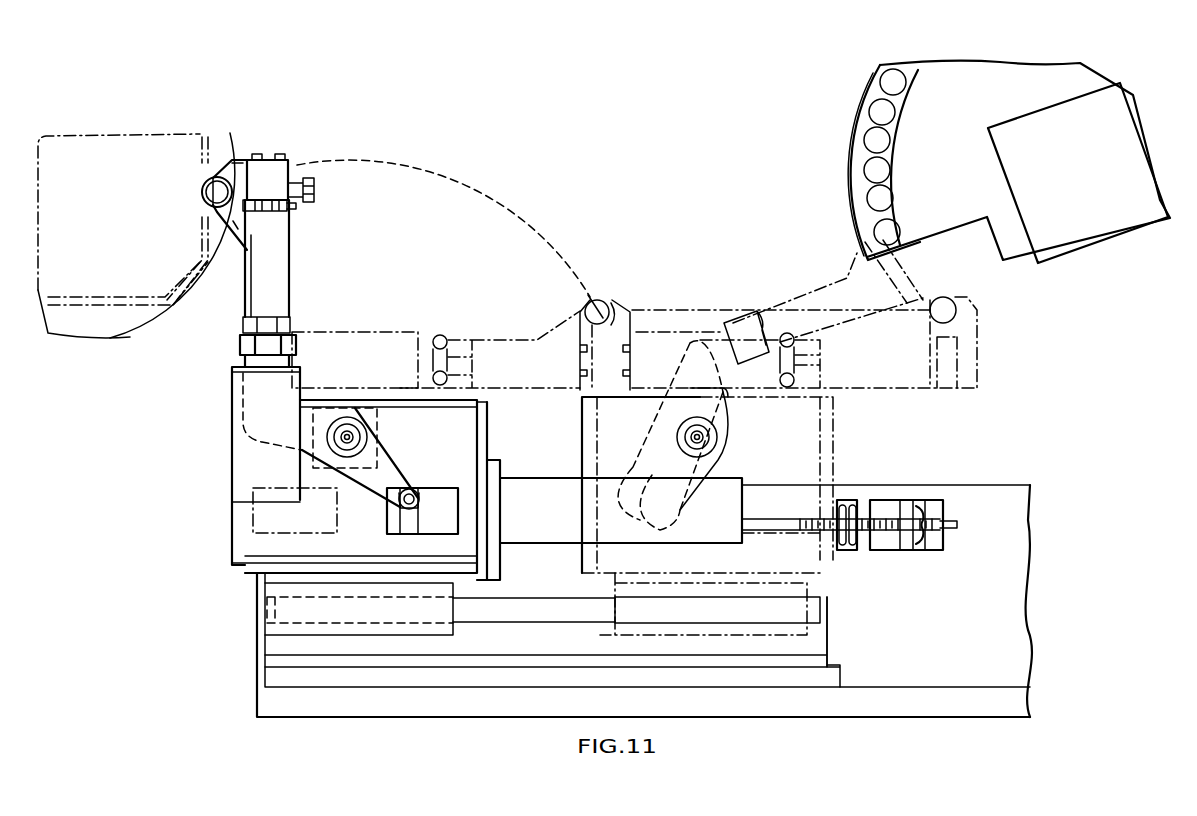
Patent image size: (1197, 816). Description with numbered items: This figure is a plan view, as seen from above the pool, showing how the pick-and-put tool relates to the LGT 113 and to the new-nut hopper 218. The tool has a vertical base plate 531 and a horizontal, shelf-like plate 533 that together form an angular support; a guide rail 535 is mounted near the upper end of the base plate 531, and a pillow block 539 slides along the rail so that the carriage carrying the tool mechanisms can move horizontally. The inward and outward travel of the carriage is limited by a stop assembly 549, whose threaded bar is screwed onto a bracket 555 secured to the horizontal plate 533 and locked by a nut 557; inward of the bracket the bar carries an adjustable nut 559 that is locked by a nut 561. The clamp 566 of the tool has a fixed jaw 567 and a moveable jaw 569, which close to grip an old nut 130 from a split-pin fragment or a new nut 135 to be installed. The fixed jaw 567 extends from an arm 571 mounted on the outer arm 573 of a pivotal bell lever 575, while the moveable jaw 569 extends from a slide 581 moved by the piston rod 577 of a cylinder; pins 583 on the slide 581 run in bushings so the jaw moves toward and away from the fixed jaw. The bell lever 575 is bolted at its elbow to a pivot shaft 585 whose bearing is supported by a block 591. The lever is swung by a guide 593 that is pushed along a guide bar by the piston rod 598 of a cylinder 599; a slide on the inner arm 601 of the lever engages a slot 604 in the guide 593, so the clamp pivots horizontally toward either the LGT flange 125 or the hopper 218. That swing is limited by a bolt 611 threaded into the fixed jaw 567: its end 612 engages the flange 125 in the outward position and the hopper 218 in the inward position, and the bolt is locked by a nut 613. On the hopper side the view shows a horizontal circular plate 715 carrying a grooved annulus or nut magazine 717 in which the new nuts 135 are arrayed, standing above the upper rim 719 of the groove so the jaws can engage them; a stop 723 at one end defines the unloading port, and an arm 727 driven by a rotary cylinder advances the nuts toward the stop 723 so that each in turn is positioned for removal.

The LGT 113 is at (138, 305).
The LGT flange 125 is at (130, 337).
The nut 130 is at (215, 190).
The new nut 135 is at (212, 198).
The nut hopper 218 is at (833, 117).
The vertical base plate 531 is at (957, 703).
The horizontal plate 533 is at (1035, 585).
The guide rail 535 is at (552, 617).
The pillow block 539 is at (453, 630).
The stop assembly 549 is at (890, 470).
The bracket 555 is at (932, 552).
The nut 557 is at (912, 505).
The nut 559 is at (845, 550).
The nut 561 is at (858, 550).
The clamp 566 is at (218, 152).
The fixed jaw 567 is at (227, 167).
The moveable jaw 569 is at (207, 223).
The arm 571 is at (291, 320).
The outer arm 573 is at (250, 397).
The pivotal bell lever 575 is at (451, 435).
The piston rod 577 is at (250, 320).
The slide 581 is at (281, 178).
The pins 583 is at (285, 212).
The pivot shaft 585 is at (347, 430).
The block 591 is at (300, 458).
The guide 593 is at (448, 532).
The piston rod 598 is at (462, 502).
The cylinder 599 is at (565, 476).
The inner arm 601 is at (403, 472).
The slot 604 is at (405, 528).
The bolt 611 is at (305, 181).
The end 612 is at (238, 219).
The nut 613 is at (300, 208).
The horizontal circular plate 715 is at (923, 172).
The grooved annulus 717 is at (897, 120).
The upper rim 719 is at (867, 90).
The stop 723 is at (910, 250).
The arm 727 is at (1118, 200).